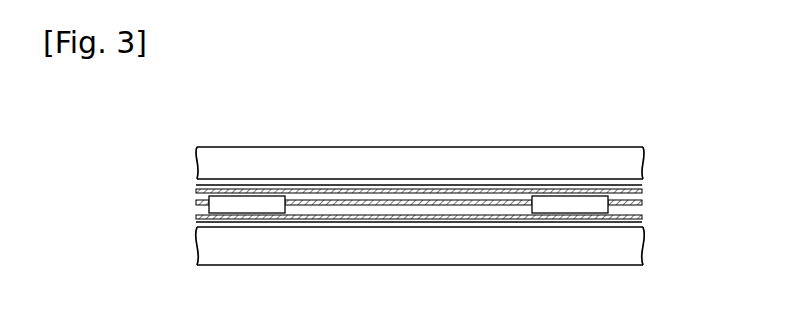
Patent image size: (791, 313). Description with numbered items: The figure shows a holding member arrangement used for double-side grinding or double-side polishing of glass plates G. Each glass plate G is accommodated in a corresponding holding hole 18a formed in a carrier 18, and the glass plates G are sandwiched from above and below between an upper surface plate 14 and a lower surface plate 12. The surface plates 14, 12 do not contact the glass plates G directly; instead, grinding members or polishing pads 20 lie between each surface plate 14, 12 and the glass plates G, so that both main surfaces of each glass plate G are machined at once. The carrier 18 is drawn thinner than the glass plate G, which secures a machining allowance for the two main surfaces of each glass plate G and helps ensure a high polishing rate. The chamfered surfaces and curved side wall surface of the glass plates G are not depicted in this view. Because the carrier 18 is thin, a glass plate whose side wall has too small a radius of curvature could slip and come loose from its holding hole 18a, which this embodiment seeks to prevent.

The surface plate 12 is at (425, 240).
The surface plate 14 is at (420, 160).
The carrier 18 is at (304, 204).
The holding hole 18a is at (219, 203).
The polishing pad 20 is at (498, 192).
The glass plate G is at (247, 208).